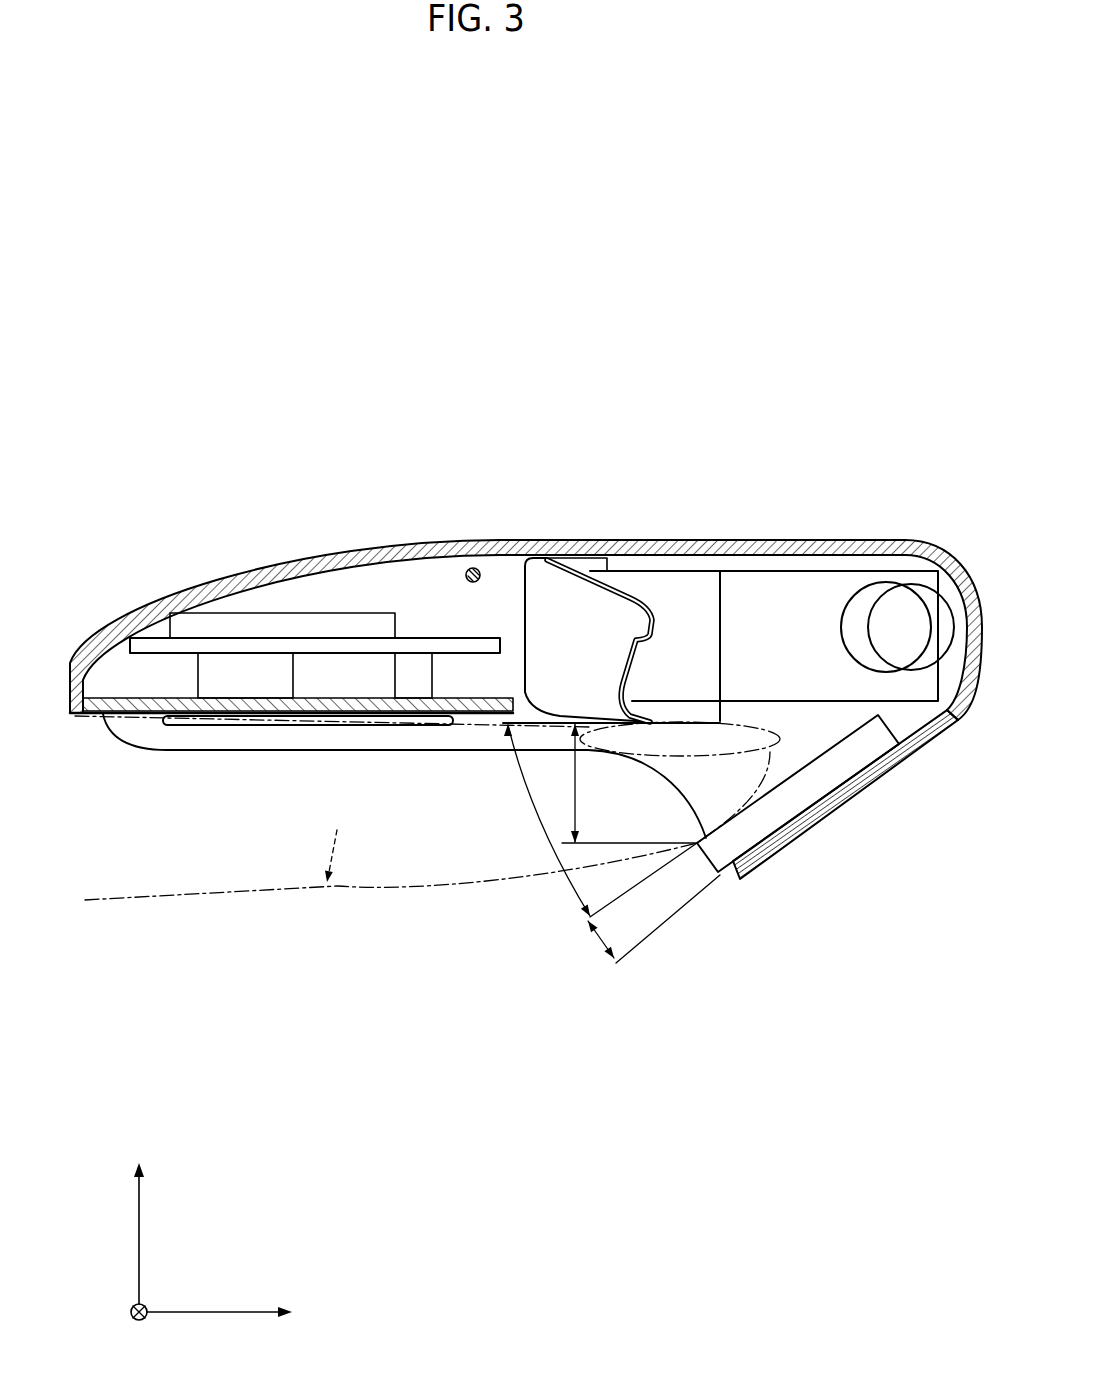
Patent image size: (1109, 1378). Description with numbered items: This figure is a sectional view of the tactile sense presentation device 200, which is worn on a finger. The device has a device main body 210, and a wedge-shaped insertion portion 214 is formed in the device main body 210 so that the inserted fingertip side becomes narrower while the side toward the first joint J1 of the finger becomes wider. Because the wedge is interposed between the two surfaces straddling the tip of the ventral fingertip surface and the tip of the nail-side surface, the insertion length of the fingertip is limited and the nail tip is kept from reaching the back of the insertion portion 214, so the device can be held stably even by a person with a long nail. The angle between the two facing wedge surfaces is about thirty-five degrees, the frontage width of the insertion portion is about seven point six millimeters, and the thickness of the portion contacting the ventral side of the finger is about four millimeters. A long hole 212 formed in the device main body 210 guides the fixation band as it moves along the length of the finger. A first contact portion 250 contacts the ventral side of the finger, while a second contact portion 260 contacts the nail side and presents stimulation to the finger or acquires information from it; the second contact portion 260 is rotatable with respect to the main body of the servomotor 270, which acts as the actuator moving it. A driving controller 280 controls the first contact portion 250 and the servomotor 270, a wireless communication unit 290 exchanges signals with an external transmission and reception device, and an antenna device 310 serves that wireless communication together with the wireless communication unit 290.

The tactile sense presentation device 200 is at (708, 370).
The device main body 210 is at (122, 611).
The long hole 212 is at (173, 718).
The insertion portion 214 is at (793, 750).
The first contact portion 250 is at (767, 825).
The second contact portion 260 is at (520, 603).
The servomotor 270 is at (770, 597).
The driving controller 280 is at (185, 648).
The wireless communication unit 290 is at (290, 620).
The antenna device 310 is at (472, 567).
The first joint J1 is at (345, 886).